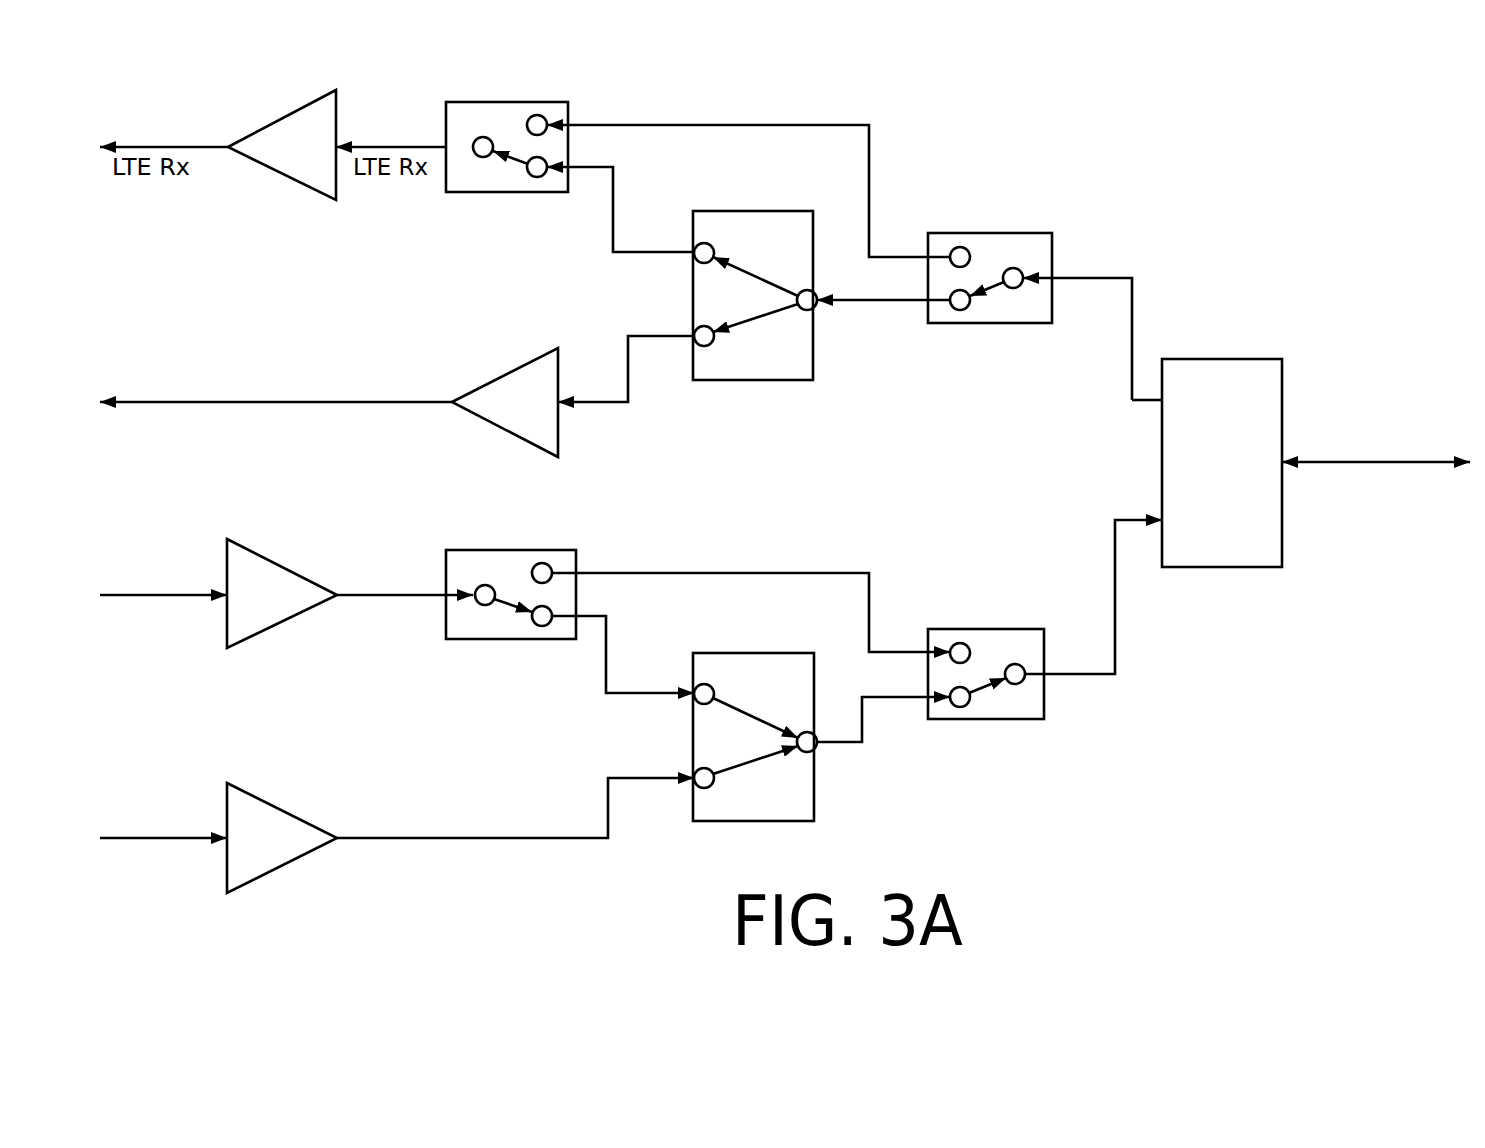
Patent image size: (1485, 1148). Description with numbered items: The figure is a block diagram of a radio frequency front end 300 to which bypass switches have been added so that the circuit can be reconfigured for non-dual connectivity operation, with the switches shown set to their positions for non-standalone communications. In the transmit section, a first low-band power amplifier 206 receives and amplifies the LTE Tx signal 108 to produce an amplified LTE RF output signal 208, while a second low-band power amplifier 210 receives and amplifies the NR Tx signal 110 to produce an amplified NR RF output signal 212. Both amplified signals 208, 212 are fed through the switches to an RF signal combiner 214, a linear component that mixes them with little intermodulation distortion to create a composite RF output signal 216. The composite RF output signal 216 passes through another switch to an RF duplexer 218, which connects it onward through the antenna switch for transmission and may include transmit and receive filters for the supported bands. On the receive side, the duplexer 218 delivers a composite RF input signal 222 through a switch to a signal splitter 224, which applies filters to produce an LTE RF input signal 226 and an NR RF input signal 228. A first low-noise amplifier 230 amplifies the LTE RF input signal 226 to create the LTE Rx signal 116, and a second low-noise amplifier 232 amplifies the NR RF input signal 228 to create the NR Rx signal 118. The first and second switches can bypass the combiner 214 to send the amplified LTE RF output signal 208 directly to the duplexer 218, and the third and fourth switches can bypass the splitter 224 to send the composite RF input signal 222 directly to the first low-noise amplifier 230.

The RFFE with bypass switches 300 is at (1300, 90).
The LTE Tx signal 108 is at (133, 595).
The NR Tx signal 110 is at (140, 838).
The LTE Rx signal 116 is at (392, 144).
The NR Rx signal 118 is at (150, 402).
The first low-band power amplifier 206 is at (272, 568).
The amplified LTE RF output signal 208 is at (375, 593).
The second low-band power amplifier 210 is at (270, 815).
The amplified NR RF output signal 212 is at (398, 838).
The RF signal combiner 214 is at (780, 662).
The composite RF output signal 216 is at (910, 700).
The RF duplexer 218 is at (1261, 366).
The composite RF input signal 222 is at (762, 123).
The signal splitter 224 is at (800, 223).
The LTE RF input signal 226 is at (613, 236).
The NR RF input signal 228 is at (630, 380).
The first low-noise amplifier 230 is at (302, 118).
The second low-noise amplifier 232 is at (515, 382).